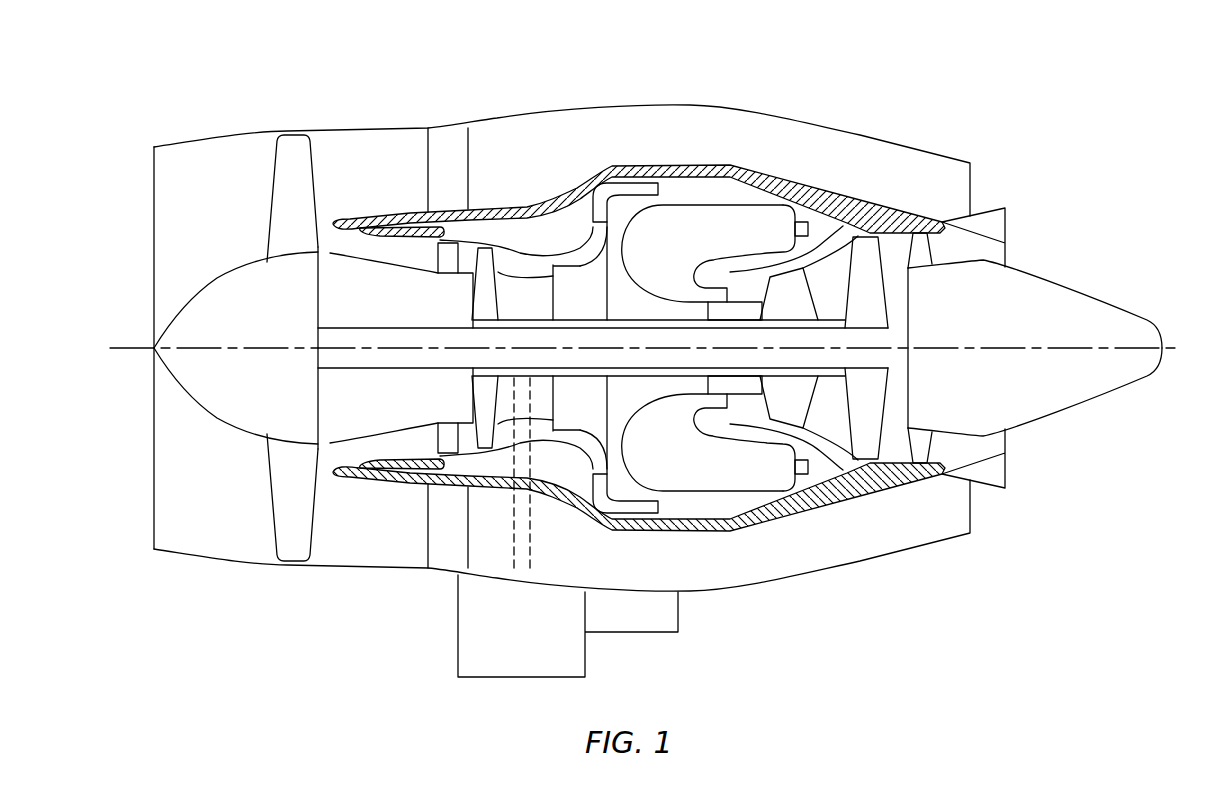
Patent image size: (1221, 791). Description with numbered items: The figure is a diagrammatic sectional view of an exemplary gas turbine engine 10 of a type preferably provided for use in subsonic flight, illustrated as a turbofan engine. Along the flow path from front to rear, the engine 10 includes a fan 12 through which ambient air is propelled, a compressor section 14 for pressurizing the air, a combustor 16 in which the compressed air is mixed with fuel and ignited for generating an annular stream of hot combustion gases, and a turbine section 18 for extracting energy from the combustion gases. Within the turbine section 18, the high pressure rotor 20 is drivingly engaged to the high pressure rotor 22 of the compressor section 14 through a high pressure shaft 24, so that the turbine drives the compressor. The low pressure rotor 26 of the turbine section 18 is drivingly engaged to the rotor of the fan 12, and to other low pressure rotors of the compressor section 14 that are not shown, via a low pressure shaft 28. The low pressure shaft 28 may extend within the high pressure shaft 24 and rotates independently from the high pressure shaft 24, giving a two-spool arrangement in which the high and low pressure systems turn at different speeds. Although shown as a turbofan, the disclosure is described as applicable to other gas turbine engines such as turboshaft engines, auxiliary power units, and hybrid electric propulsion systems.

The gas turbine engine 10 is at (906, 109).
The fan 12 is at (276, 489).
The compressor section 14 is at (510, 260).
The combustor 16 is at (708, 218).
The turbine section 18 is at (827, 410).
The high pressure rotor 20 is at (800, 287).
The high pressure rotor 22 is at (578, 274).
The high pressure shaft 24 is at (710, 318).
The low pressure rotor 26 is at (865, 268).
The low pressure shaft 28 is at (370, 370).